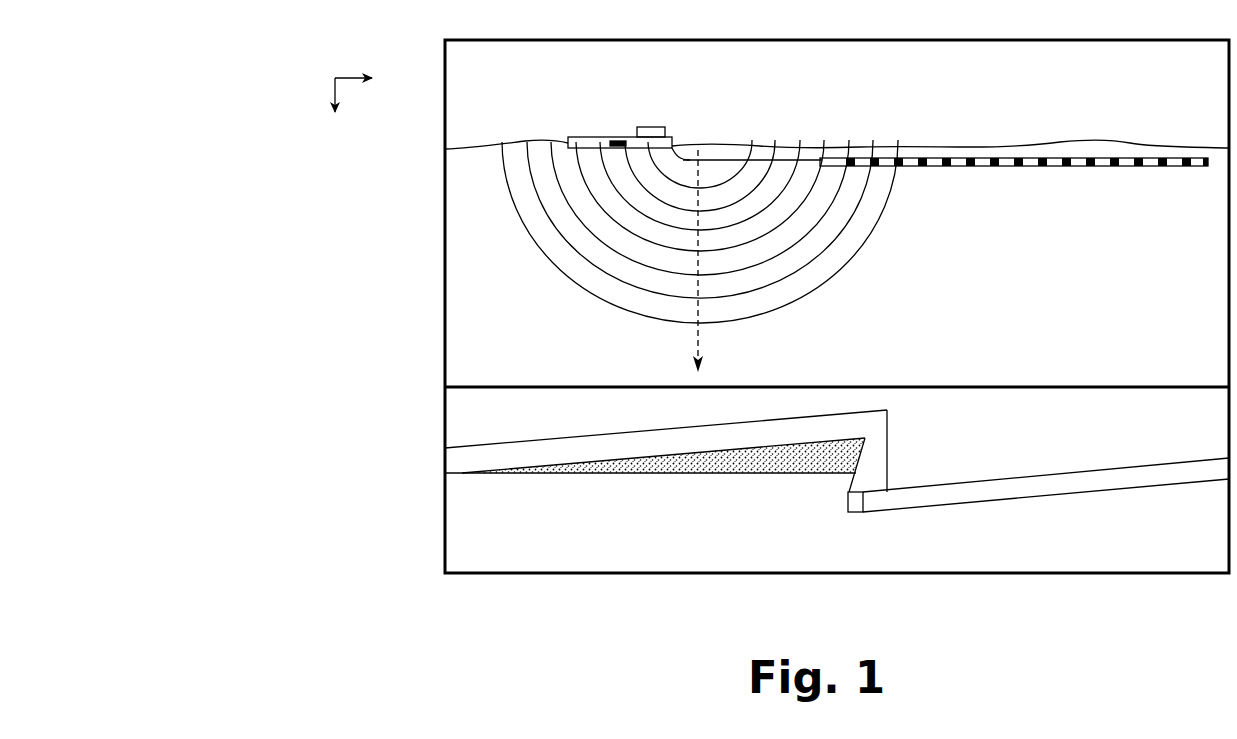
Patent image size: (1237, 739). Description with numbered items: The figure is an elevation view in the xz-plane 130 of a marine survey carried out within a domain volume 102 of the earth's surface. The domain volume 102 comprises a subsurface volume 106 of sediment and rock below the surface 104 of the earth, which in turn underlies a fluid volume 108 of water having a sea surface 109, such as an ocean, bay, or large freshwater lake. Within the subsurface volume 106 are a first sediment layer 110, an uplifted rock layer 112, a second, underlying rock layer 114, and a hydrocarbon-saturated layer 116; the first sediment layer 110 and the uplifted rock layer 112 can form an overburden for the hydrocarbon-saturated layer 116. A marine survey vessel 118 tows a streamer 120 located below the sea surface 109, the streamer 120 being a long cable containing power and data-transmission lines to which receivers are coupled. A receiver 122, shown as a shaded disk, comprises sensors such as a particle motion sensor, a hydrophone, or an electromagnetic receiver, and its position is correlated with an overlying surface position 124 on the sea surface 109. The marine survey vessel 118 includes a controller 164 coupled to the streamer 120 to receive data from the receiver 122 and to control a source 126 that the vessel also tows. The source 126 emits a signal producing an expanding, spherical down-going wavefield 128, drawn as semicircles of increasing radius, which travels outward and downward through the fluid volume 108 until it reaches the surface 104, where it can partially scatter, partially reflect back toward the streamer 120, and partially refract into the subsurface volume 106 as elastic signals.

The domain volume 102 is at (352, 207).
The surface of the earth 104 is at (500, 386).
The subsurface volume 106 is at (464, 405).
The fluid volume 108 is at (464, 293).
The sea surface 109 is at (970, 147).
The first sediment layer 110 is at (1057, 445).
The uplifted rock layer 112 is at (464, 464).
The second, underlying rock layer 114 is at (567, 561).
The hydrocarbon-saturated layer 116 is at (662, 475).
The marine survey vessel 118 is at (588, 136).
The streamer 120 is at (1020, 187).
The receiver 122 is at (1134, 167).
The surface position 124 is at (1135, 143).
The source 126 is at (698, 149).
The down-going wavefield 128 is at (863, 251).
The xz-plane 130 is at (335, 78).
The controller 164 is at (626, 140).